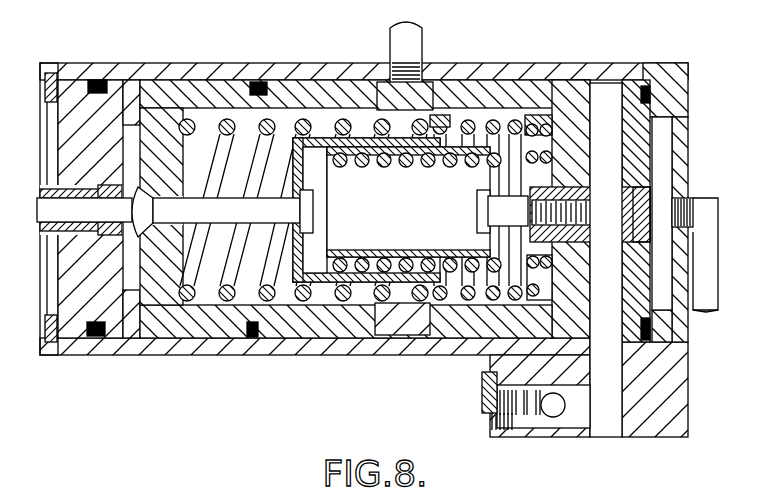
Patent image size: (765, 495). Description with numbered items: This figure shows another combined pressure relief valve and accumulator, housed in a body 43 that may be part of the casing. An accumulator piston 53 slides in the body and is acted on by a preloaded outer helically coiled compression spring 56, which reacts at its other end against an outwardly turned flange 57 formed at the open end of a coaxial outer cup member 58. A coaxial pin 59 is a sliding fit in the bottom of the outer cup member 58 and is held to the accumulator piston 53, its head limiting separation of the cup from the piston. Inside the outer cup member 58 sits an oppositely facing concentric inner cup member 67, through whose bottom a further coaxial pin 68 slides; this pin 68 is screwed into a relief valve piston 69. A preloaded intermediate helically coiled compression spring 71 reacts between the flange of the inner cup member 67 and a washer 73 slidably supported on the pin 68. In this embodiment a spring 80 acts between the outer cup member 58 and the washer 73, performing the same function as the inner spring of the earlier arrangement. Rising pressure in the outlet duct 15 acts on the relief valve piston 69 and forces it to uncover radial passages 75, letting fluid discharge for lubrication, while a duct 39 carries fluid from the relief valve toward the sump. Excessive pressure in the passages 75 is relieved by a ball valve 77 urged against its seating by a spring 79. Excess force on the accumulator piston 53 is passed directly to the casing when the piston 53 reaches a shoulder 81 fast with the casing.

The body 43 is at (138, 70).
The accumulator piston 53 is at (173, 123).
The outer helically coiled compression spring 56 is at (268, 125).
The outer cup member 58 is at (322, 140).
The outwardly turned flange 57 is at (433, 118).
The spring 80 is at (466, 125).
The washer 73 is at (548, 128).
The duct 39 is at (52, 208).
The pin 59 is at (222, 224).
The pin 68 is at (494, 226).
The inner cup member 67 is at (352, 262).
The intermediate helically coiled compression spring 71 is at (402, 263).
The relief valve piston 69 is at (612, 237).
The radial passages 75 is at (593, 318).
The outlet duct 15 is at (706, 314).
The shoulder 81 is at (378, 333).
The spring 79 is at (524, 412).
The ball valve 77 is at (553, 412).